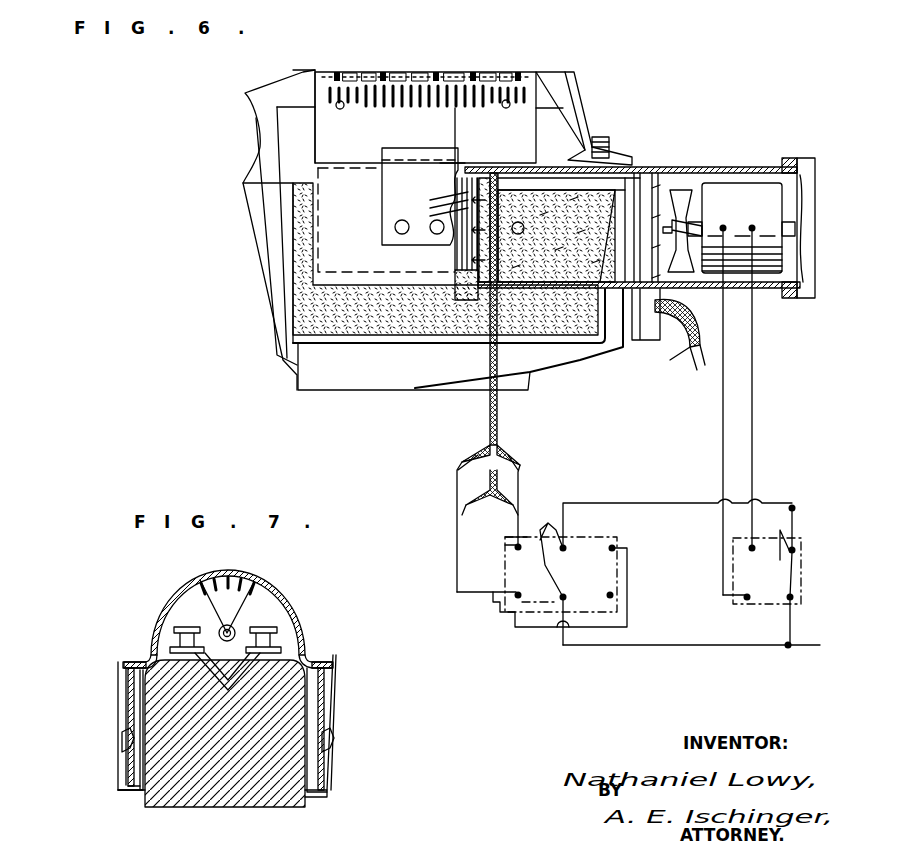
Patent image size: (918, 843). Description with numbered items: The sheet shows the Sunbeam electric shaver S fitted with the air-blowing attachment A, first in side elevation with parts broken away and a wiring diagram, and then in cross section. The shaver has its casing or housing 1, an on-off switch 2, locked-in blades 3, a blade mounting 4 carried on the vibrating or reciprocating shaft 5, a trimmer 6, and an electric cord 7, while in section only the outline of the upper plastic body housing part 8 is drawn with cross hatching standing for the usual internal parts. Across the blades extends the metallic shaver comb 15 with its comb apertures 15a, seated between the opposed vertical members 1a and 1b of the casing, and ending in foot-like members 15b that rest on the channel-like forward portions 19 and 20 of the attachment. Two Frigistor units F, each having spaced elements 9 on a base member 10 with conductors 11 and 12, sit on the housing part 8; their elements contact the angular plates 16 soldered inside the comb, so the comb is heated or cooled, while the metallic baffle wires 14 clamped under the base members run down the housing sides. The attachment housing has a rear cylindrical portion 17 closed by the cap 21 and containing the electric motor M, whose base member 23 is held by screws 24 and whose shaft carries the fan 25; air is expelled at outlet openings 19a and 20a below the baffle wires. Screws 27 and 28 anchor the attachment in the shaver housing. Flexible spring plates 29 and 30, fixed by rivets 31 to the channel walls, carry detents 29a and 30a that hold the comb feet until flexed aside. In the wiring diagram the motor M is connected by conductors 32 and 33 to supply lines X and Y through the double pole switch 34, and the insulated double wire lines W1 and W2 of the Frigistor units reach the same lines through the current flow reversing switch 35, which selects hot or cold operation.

In FIG. 6, the casing or housing 1 is at (340, 375).
In FIG. 6, the vertically extending member 1a is at (313, 72).
In FIG. 6, the vertically extending member 1b is at (560, 76).
In FIG. 6, the on-off switch 2 is at (612, 136).
In FIG. 7, the blades 3 is at (190, 604).
In FIG. 7, the blade mounting 4 is at (195, 606).
In FIG. 7, the blade mounting vibrating or reciprocating shaft 5 is at (250, 612).
In FIG. 6, the trimmer 6 is at (245, 93).
In FIG. 6, the electric cord 7 is at (675, 343).
In FIG. 7, the upper plastic material body housing part 8 is at (150, 805).
In FIG. 7, the elements 9 is at (227, 624).
In FIG. 7, the base member 10 is at (227, 684).
In FIG. 6, the insulated conductor 11 is at (476, 458).
In FIG. 6, the insulated conductor 12 is at (510, 462).
In FIG. 6, the baffle wires or elements 14 is at (445, 230).
In FIG. 7, the baffle wires or elements 14 is at (135, 702).
In FIG. 6, the shaver comb 15 is at (335, 128).
In FIG. 7, the shaver comb 15 is at (254, 584).
In FIG. 6, the comb apertures 15a is at (508, 72).
In FIG. 6, the foot-like member 15b is at (500, 165).
In FIG. 7, the foot-like member 15b is at (368, 642).
In FIG. 7, the angular contact plate 16 is at (175, 620).
In FIG. 6, the rear cylindrical portion 17 is at (722, 178).
In FIG. 7, the bifurcated channel-like forward portion 19 is at (126, 772).
In FIG. 7, the air outlet opening 19a is at (118, 795).
In FIG. 6, the bifurcated channel-like forward portion 20 is at (340, 266).
In FIG. 7, the bifurcated channel-like forward portion 20 is at (330, 772).
In FIG. 7, the air outlet opening 20a is at (316, 800).
In FIG. 6, the closure member or cap 21 is at (806, 160).
In FIG. 6, the base member 23 is at (758, 300).
In FIG. 6, the screws 24 is at (695, 290).
In FIG. 6, the fan 25 is at (672, 225).
In FIG. 6, the screw 27 is at (520, 224).
In FIG. 6, the screw 28 is at (548, 3).
In FIG. 7, the flexible spring metal plate 29 is at (118, 672).
In FIG. 7, the detent member or formation 29a is at (120, 657).
In FIG. 6, the flexible spring metal plate 30 is at (400, 184).
In FIG. 7, the flexible spring metal plate 30 is at (335, 682).
In FIG. 6, the detent member or formation 30a is at (430, 156).
In FIG. 7, the detent member or formation 30a is at (330, 658).
In FIG. 6, the rivets 31 is at (395, 228).
In FIG. 7, the rivets 31 is at (115, 740).
In FIG. 6, the conductor 32 is at (718, 460).
In FIG. 6, the conductor 33 is at (752, 430).
In FIG. 6, the double pole switch 34 is at (733, 610).
In FIG. 6, the current flow reversing switch 35 is at (615, 537).
In FIG. 6, the attachment unit A is at (770, 96).
In FIG. 7, the attachment unit A is at (195, 555).
In FIG. 6, the electric motor M is at (740, 188).
In FIG. 6, the electric shaver S is at (238, 250).
In FIG. 7, the Frigistor unit F is at (225, 733).
In FIG. 6, the insulated double wire line W1 is at (488, 418).
In FIG. 6, the insulated double wire line W2 is at (478, 486).
In FIG. 6, the main power supply line X is at (820, 508).
In FIG. 6, the main power supply line Y is at (800, 650).